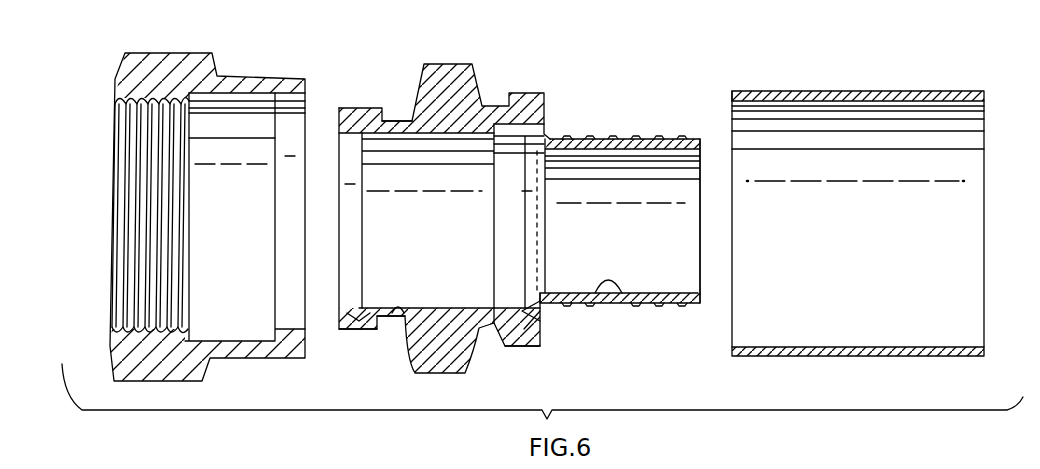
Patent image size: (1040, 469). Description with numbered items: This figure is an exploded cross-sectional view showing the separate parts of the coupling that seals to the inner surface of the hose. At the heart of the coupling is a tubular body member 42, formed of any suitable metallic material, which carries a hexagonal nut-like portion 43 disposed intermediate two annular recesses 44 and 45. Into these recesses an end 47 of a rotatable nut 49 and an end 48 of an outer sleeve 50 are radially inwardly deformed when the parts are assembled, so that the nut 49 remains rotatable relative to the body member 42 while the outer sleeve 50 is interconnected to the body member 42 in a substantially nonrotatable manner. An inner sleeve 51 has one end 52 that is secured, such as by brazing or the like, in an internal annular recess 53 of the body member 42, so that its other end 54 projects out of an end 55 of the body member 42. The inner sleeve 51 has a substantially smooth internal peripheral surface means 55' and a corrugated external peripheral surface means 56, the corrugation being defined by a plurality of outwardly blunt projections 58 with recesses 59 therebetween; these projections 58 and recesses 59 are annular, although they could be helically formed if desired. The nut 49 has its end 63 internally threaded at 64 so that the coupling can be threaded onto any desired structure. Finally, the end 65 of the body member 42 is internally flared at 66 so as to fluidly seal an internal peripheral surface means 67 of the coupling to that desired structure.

The tubular body member 42 is at (453, 208).
The hexagonal nut-like portion 43 is at (437, 62).
The annular recess 44 is at (496, 93).
The annular recess 45 is at (396, 118).
The end of rotatable nut 47 is at (287, 82).
The end of outer sleeve 48 is at (750, 90).
The rotatable nut 49 is at (187, 206).
The outer sleeve 50 is at (858, 196).
The inner sleeve 51 is at (672, 289).
The end of inner sleeve 52 is at (500, 303).
The internal annular recess 53 is at (503, 346).
The other end of inner sleeve 54 is at (700, 303).
The end of body member 55 is at (562, 336).
The internal peripheral surface means 55' is at (614, 310).
The corrugated external peripheral surface means 56 is at (634, 214).
The outwardly blunt projections 58 is at (600, 136).
The recesses 59 is at (611, 137).
The end of nut 63 is at (112, 76).
The internal threads 64 is at (126, 119).
The end of body part 65 is at (353, 330).
The internal flare 66 is at (345, 312).
The internal peripheral surface means 67 is at (392, 316).